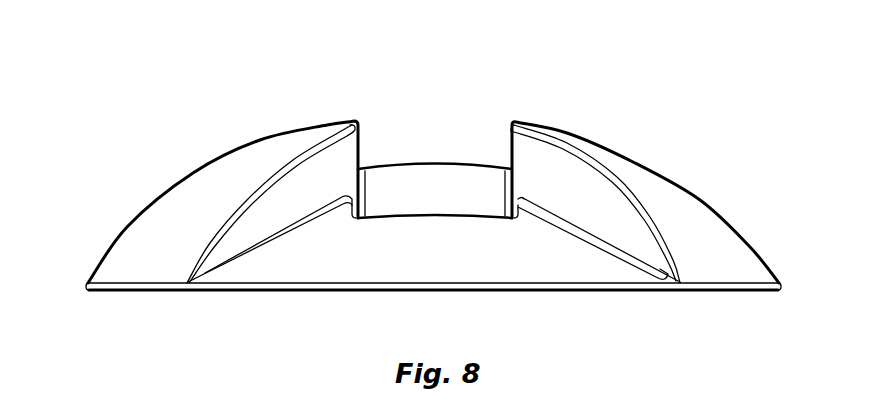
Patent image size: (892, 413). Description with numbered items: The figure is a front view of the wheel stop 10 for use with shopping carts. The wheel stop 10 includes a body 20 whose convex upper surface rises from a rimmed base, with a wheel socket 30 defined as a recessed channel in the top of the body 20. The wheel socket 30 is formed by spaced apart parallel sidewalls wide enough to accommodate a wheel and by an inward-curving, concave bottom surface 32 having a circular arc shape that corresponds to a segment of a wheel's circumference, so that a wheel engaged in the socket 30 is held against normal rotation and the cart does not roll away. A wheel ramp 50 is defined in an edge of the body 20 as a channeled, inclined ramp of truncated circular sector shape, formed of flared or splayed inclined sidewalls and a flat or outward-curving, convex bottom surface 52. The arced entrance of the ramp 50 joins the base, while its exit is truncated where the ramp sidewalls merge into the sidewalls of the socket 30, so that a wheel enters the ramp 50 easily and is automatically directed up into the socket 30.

The wheel stop 10 is at (173, 160).
The body 20 is at (670, 182).
The wheel socket 30 is at (451, 138).
The bottom surface 32 is at (393, 180).
The wheel ramp 50 is at (547, 238).
The bottom surface 52 is at (276, 273).